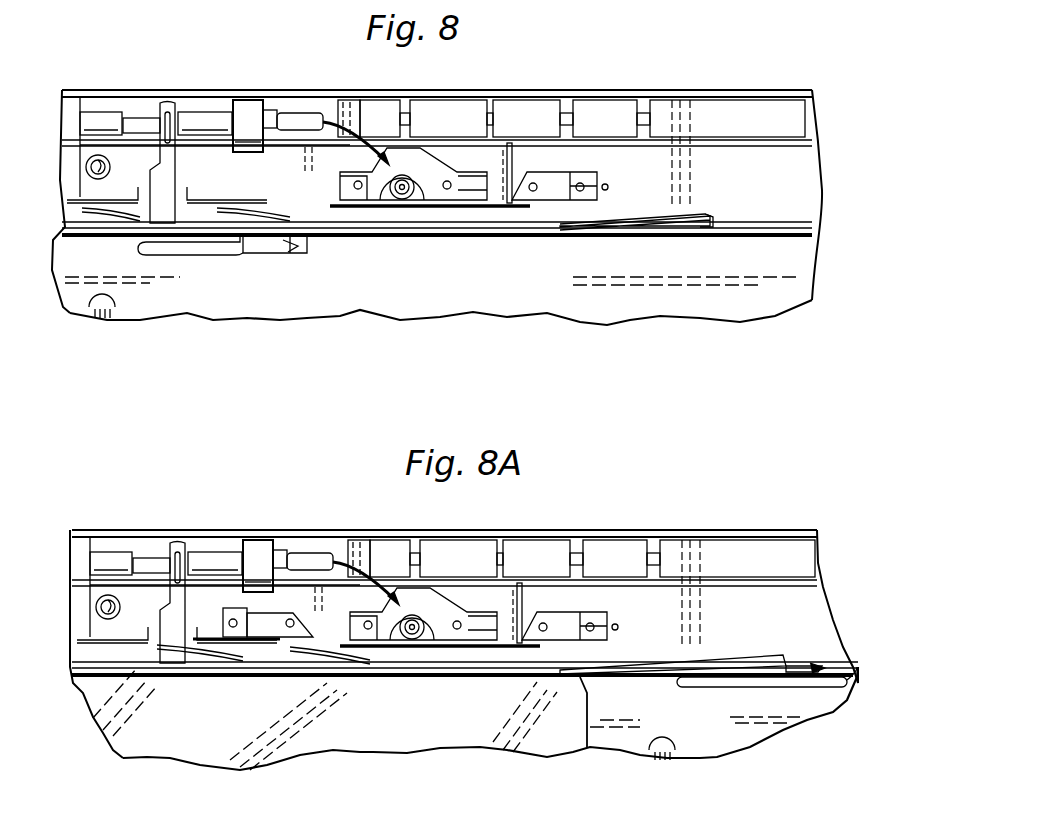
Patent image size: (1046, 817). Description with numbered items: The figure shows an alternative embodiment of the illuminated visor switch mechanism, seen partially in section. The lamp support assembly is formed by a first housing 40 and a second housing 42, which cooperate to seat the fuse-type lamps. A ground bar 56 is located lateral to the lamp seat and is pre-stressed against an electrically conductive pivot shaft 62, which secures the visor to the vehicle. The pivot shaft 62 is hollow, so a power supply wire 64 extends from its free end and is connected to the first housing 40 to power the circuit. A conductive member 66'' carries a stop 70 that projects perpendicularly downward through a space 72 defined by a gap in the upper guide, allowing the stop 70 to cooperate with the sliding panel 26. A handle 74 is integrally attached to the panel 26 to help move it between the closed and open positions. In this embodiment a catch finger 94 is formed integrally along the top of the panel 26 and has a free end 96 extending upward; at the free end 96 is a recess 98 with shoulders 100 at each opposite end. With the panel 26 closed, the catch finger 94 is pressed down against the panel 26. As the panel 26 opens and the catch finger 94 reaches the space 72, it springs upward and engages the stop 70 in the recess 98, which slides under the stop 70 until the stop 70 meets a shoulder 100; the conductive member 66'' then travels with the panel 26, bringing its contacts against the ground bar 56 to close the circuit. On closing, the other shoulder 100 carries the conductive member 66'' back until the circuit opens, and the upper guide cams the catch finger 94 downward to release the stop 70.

In FIG. 8, the panel 26 is at (632, 307).
In FIG. 8, the first housing 40 is at (445, 168).
In FIG. 8A, the first housing 40 is at (455, 608).
In FIG. 8, the second housing 42 is at (558, 175).
In FIG. 8A, the second housing 42 is at (245, 608).
In FIG. 8, the ground bar 56 is at (150, 100).
In FIG. 8A, the ground bar 56 is at (160, 540).
In FIG. 8, the pivot shaft 62 is at (288, 100).
In FIG. 8A, the pivot shaft 62 is at (323, 575).
In FIG. 8, the power supply wire 64 is at (333, 100).
In FIG. 8A, the power supply wire 64 is at (350, 540).
In FIG. 8, the conductive member 66'' is at (516, 137).
In FIG. 8A, the conductive member 66'' is at (278, 651).
In FIG. 8, the stop 70 is at (717, 217).
In FIG. 8A, the stop 70 is at (788, 667).
In FIG. 8, the space 72 is at (687, 217).
In FIG. 8A, the space 72 is at (645, 663).
In FIG. 8, the handle 74 is at (108, 322).
In FIG. 8, the catch finger 94 is at (203, 240).
In FIG. 8A, the catch finger 94 is at (725, 683).
In FIG. 8, the free end 96 is at (288, 253).
In FIG. 8A, the free end 96 is at (820, 670).
In FIG. 8, the recess 98 is at (262, 237).
In FIG. 8A, the shoulder 100 is at (795, 680).